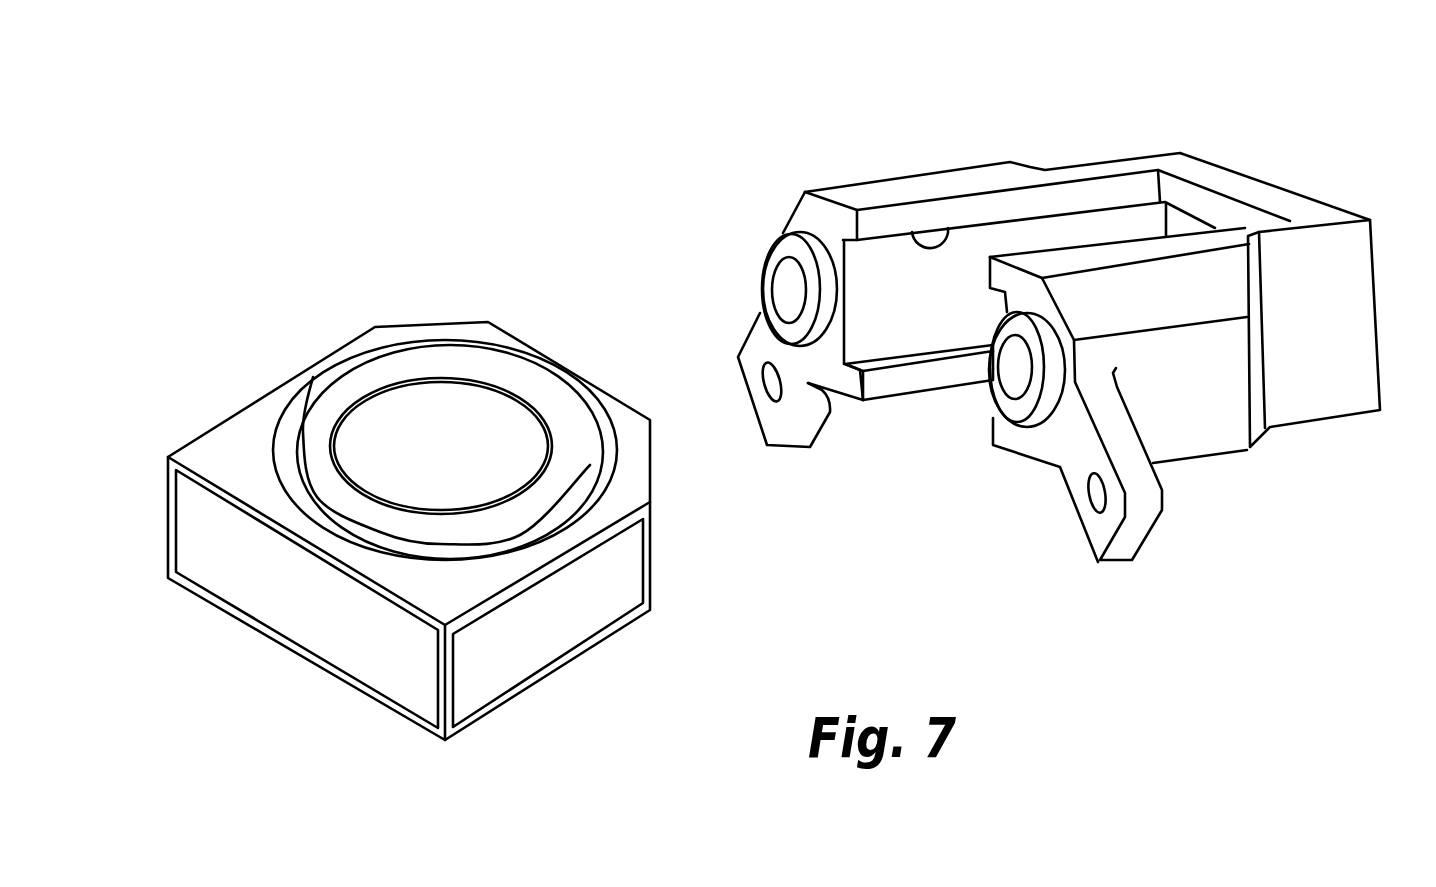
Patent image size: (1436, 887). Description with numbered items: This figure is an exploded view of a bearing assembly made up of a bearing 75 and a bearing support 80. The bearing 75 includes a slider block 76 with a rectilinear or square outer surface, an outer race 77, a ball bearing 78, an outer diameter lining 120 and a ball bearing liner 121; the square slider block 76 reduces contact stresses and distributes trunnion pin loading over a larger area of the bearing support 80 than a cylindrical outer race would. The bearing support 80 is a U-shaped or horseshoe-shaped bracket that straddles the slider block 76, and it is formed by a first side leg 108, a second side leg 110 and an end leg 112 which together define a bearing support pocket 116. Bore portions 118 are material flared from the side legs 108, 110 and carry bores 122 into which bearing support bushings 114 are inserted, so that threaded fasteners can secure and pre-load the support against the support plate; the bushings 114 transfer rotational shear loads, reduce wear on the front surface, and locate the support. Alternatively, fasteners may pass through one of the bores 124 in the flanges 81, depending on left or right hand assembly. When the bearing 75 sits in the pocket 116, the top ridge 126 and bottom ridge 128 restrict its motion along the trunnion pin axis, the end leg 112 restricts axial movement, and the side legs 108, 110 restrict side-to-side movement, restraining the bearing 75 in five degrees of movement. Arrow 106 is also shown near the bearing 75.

The bearing 75 is at (403, 471).
The slider block 76 is at (230, 445).
The outer race 77 is at (283, 443).
The ball bearing 78 is at (404, 377).
The cover 106 is at (403, 491).
The outer diameter lining 120 is at (282, 608).
The ball bearing liner 121 is at (348, 475).
The bearing support 80 is at (1039, 326).
The flange 81 is at (829, 418).
The first side leg 108 is at (1283, 218).
The second side leg 110 is at (1126, 162).
The end leg 112 is at (1262, 205).
The bearing support bushing 114 is at (783, 250).
The bearing support pocket 116 is at (930, 300).
The bore portion 118 is at (890, 192).
The bore 122 is at (780, 289).
The bore 124 is at (765, 380).
The top ridge 126 is at (954, 230).
The bottom ridge 128 is at (937, 350).